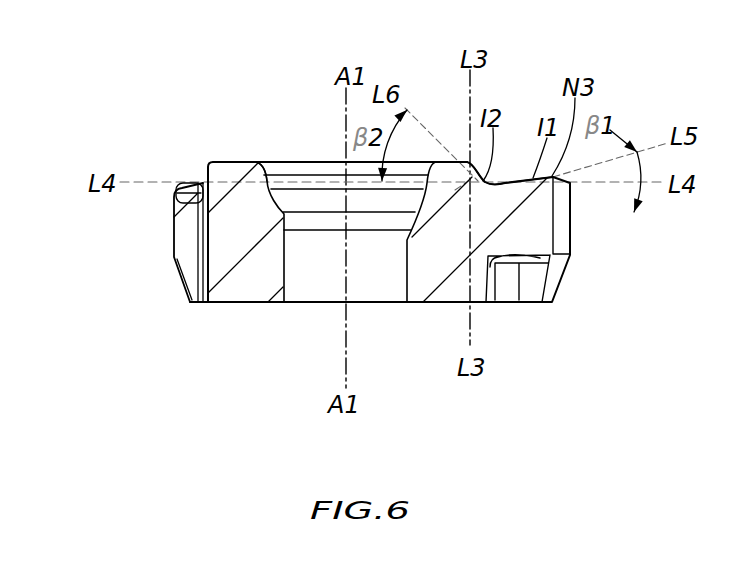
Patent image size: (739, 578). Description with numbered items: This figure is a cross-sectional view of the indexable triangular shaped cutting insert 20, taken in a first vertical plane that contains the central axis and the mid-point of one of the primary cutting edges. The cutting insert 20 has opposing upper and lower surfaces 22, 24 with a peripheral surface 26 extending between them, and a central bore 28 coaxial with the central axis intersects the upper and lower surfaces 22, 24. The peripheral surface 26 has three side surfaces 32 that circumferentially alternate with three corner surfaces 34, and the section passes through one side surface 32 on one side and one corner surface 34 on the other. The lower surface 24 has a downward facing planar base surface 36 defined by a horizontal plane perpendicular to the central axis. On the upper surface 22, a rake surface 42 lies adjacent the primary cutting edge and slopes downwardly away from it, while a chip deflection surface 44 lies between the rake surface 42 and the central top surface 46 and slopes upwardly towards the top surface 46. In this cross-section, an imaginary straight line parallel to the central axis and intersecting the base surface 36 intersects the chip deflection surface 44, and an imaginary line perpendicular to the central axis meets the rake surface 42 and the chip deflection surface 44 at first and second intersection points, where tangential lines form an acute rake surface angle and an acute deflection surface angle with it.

The cutting insert 20 is at (150, 133).
The upper surface 22 is at (238, 157).
The lower surface 24 is at (247, 303).
The peripheral surface 26 is at (190, 240).
The central bore 28 is at (317, 302).
The side surface 32 is at (207, 262).
The corner surface 34 is at (563, 225).
The base surface 36 is at (447, 303).
The rake surface 42 is at (535, 178).
The chip deflection surface 44 is at (468, 160).
The top surface 46 is at (247, 163).